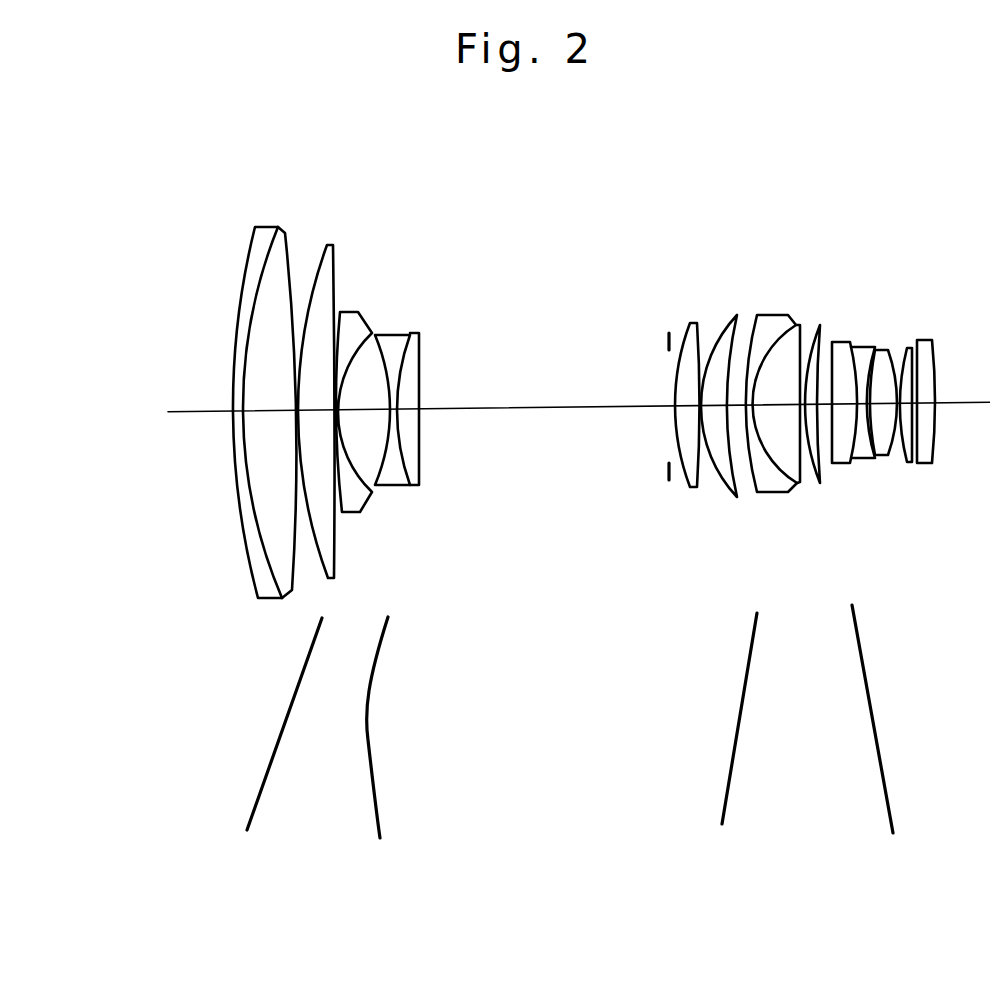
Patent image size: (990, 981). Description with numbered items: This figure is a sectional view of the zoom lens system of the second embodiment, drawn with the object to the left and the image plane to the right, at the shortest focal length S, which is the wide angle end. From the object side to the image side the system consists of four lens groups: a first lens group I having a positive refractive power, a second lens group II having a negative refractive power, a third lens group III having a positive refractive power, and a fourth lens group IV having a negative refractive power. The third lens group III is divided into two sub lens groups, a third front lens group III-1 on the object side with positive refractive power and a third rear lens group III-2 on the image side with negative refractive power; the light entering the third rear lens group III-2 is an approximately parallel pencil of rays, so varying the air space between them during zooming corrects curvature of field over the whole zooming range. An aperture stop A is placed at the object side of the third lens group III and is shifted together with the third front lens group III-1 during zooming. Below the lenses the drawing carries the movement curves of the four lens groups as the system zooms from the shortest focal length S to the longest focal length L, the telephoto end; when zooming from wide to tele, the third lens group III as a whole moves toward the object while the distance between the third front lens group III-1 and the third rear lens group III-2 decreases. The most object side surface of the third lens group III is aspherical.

The first lens group I is at (328, 167).
The second lens group II is at (340, 283).
The third lens group III is at (835, 197).
The third front lens group III-1 is at (678, 278).
The third rear lens group III-2 is at (822, 278).
The fourth lens group IV is at (930, 335).
The aperture stop A is at (668, 472).
The shortest focal length S is at (522, 416).
The longest focal length L is at (486, 728).